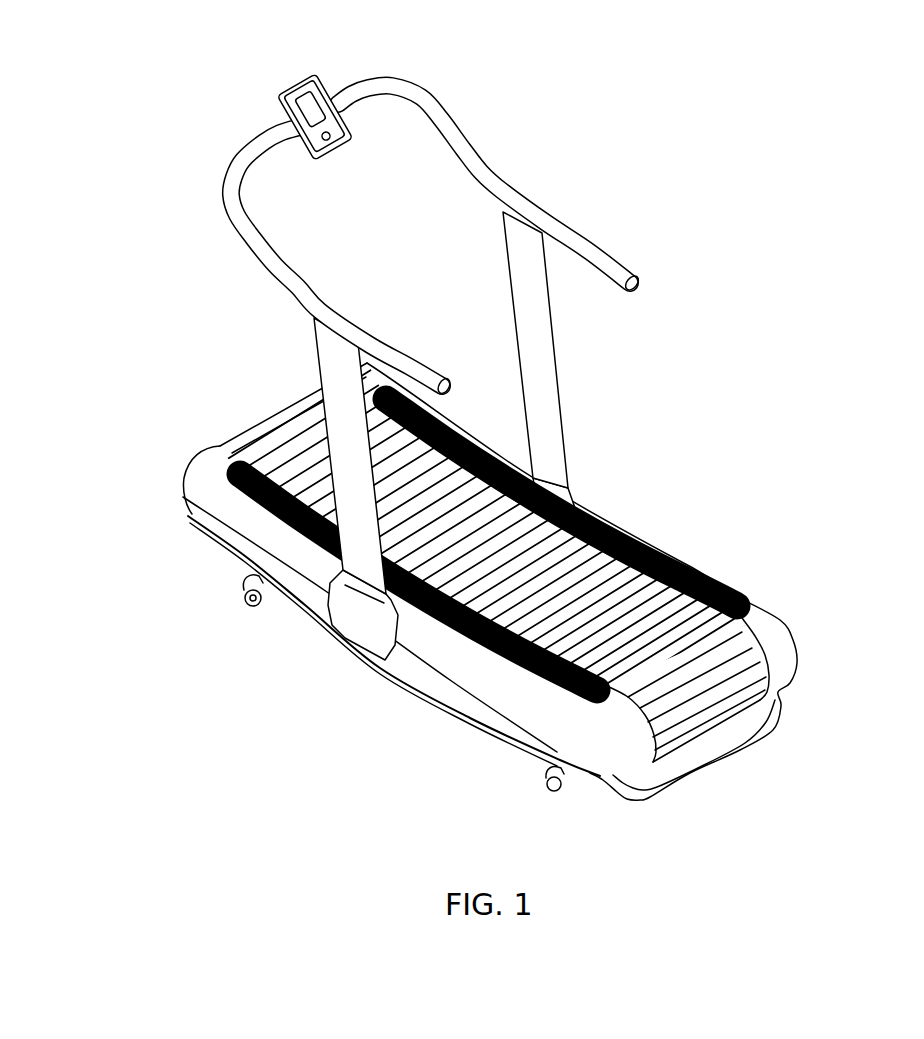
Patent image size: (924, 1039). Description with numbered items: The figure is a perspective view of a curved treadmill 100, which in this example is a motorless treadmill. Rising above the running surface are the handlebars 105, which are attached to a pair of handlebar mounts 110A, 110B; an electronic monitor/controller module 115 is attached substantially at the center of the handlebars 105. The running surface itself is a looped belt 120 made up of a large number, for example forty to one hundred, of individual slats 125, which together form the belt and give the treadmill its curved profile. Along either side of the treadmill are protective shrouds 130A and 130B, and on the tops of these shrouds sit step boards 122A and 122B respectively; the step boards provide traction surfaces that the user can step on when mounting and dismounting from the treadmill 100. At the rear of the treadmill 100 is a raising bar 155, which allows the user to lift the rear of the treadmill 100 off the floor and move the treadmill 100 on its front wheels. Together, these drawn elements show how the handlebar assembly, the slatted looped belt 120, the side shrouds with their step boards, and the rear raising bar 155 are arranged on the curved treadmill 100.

The curved treadmill 100 is at (471, 482).
The handlebars 105 is at (566, 219).
The handlebar mount 110A is at (332, 412).
The handlebar mount 110B is at (552, 378).
The electronic monitor/controller module 115 is at (291, 82).
The looped belt 120 is at (551, 534).
The step board 122A is at (278, 513).
The step board 122B is at (579, 523).
The slats 125 is at (584, 657).
The protective shroud 130A is at (188, 467).
The protective shroud 130B is at (785, 632).
The raising bar 155 is at (784, 698).